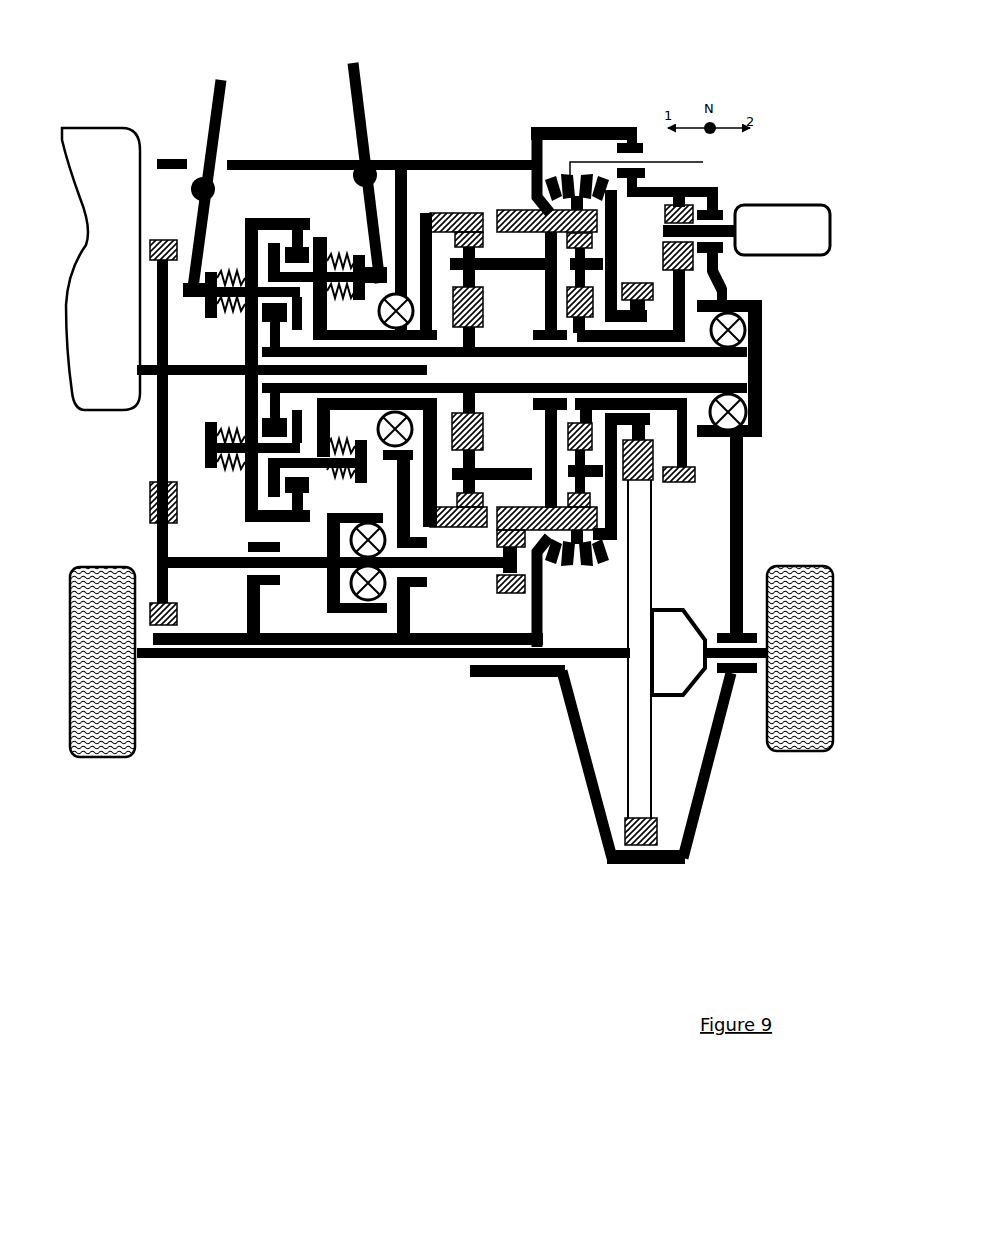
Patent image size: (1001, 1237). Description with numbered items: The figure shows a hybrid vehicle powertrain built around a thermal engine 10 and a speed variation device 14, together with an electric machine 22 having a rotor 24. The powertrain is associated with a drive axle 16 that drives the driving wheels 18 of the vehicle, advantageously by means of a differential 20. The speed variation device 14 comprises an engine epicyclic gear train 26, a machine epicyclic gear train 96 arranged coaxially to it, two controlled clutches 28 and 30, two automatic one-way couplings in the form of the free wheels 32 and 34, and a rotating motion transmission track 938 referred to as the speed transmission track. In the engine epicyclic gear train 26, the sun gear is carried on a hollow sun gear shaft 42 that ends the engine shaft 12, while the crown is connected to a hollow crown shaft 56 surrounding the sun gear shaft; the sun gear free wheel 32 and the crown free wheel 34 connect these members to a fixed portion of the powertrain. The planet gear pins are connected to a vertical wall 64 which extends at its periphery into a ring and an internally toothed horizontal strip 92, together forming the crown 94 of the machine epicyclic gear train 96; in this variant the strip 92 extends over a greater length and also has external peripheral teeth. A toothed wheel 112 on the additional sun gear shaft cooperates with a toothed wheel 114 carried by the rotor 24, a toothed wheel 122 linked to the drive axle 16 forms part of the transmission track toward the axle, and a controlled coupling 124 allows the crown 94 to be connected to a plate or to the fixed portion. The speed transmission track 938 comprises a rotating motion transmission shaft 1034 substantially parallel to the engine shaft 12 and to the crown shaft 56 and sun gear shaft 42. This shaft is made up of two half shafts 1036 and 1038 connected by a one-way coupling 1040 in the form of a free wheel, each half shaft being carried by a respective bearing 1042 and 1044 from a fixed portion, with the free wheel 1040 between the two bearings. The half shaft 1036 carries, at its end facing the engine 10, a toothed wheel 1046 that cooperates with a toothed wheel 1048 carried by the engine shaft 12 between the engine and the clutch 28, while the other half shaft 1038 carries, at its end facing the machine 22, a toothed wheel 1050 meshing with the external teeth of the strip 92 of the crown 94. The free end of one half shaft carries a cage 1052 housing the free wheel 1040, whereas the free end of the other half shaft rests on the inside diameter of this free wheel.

The thermal engine 10 is at (101, 269).
The engine shaft 12 is at (153, 345).
The speed variation device 14 is at (462, 148).
The drive axle 16 is at (368, 690).
The driving wheels 18 is at (118, 758).
The differential 20 is at (615, 725).
The electric machine 22 is at (782, 230).
The rotor 24 is at (736, 225).
The engine epicyclic gear train 26 is at (454, 193).
The controlled clutch 28 is at (240, 316).
The controlled clutch 30 is at (312, 504).
The sun gear free wheel 32 is at (764, 388).
The crown free wheel 34 is at (381, 312).
The sun gear shaft 42 is at (757, 330).
The crown shaft 56 is at (375, 417).
The vertical wall 64 is at (550, 432).
The internally toothed horizontal strip 92 is at (497, 213).
The crown 94 is at (510, 597).
The machine epicyclic gear train 96 is at (516, 190).
The toothed wheel 112 is at (700, 454).
The toothed wheel 114 is at (682, 205).
The toothed wheel 122 is at (618, 833).
The controlled coupling 124 is at (580, 570).
The rotating motion transmission track 938 is at (213, 573).
The rotating motion transmission shaft 1034 is at (238, 545).
The half shaft 1036 is at (204, 557).
The half shaft 1038 is at (456, 570).
The one-way coupling 1040 is at (340, 587).
The bearing 1042 is at (273, 543).
The bearing 1044 is at (392, 660).
The toothed wheel 1046 is at (148, 515).
The toothed wheel 1048 is at (157, 478).
The toothed wheel 1050 is at (490, 598).
The cage 1052 is at (352, 646).